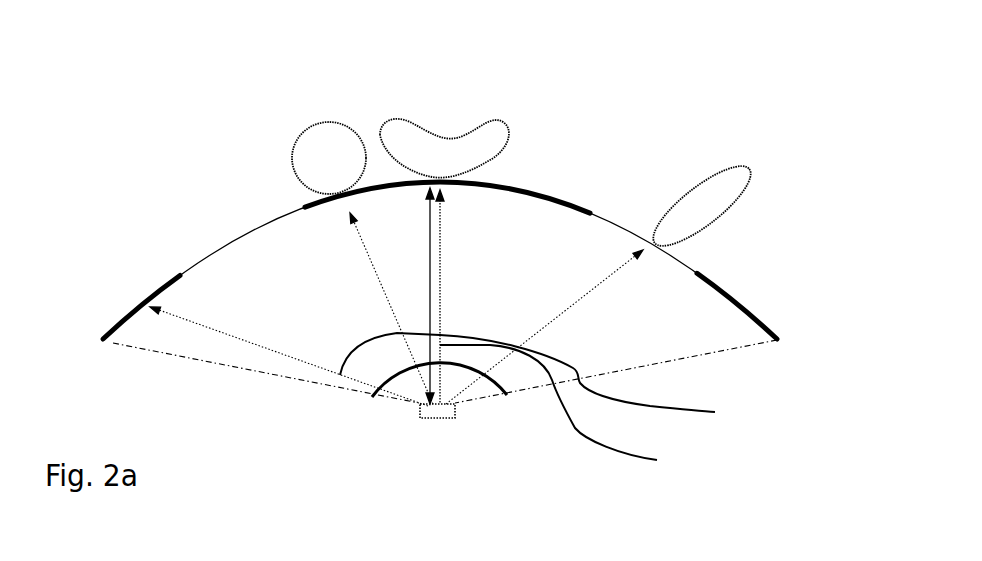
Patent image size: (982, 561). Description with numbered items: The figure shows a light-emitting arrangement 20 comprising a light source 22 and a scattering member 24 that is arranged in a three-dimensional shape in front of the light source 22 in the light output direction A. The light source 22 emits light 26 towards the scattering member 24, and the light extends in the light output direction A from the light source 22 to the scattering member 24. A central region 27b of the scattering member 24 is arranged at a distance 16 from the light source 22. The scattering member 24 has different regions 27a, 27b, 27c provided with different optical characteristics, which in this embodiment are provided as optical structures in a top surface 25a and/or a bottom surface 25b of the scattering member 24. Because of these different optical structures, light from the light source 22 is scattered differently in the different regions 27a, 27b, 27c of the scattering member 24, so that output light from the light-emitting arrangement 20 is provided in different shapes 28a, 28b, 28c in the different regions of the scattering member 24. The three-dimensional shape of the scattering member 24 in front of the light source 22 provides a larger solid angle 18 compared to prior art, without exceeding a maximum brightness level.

The distance 16 is at (387, 400).
The solid angle 18 is at (493, 385).
The light-emitting arrangement 20 is at (720, 118).
The light source 22 is at (440, 418).
The scattering member 24 is at (573, 206).
The top surface 25a is at (180, 275).
The bottom surface 25b is at (210, 258).
The light 26 is at (280, 352).
The region 27a is at (318, 201).
The central region 27b is at (470, 180).
The region 27c is at (680, 251).
The shape 28a is at (322, 124).
The shape 28b is at (414, 126).
The shape 28c is at (753, 167).
The light output direction A is at (565, 410).